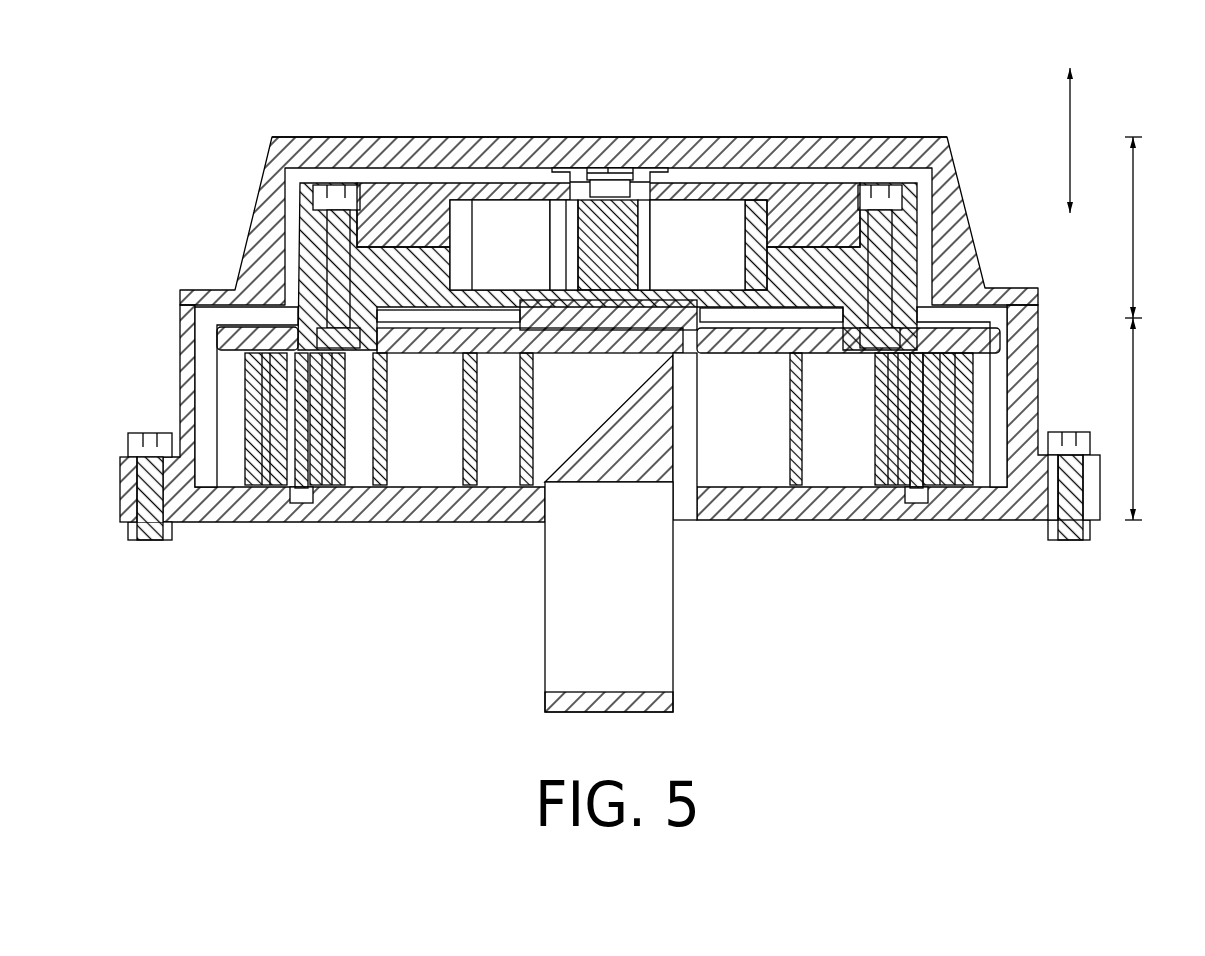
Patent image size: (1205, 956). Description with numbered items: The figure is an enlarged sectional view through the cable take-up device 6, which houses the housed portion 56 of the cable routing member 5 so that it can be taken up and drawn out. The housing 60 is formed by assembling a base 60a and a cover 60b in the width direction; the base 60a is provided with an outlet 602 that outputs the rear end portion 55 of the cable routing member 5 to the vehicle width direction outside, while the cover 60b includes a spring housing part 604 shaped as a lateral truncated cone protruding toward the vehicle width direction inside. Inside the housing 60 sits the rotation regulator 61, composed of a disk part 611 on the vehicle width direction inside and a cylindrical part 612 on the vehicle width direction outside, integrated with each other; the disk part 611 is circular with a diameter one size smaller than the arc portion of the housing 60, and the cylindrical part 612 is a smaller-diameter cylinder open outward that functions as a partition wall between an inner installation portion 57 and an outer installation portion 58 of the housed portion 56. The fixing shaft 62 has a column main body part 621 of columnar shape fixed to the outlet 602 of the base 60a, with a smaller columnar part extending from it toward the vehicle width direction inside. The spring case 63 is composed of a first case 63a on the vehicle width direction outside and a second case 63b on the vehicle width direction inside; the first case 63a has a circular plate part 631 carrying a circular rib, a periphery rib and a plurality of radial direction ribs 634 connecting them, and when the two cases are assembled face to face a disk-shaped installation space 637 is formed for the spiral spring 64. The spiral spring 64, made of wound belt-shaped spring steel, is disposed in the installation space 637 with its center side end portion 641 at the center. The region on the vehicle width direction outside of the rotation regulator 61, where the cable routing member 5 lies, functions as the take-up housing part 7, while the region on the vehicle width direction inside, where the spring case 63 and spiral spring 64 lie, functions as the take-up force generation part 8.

The cable routing member 5 is at (665, 597).
The rear end portion 55 is at (675, 672).
The cable take-up device 6 is at (192, 127).
The take-up housing part 7 is at (1141, 419).
The take-up force generation part 8 is at (1141, 227).
The housed portion 56 is at (600, 484).
The inner installation portion 57 is at (327, 482).
The outer installation portion 58 is at (243, 480).
The housing 60 is at (592, 318).
The base 60a is at (600, 439).
The cover 60b is at (561, 184).
The outlet 602 is at (700, 500).
The spring housing part 604 is at (835, 137).
The rotation regulator 61 is at (552, 437).
The disk part 611 is at (192, 340).
The cylindrical part 612 is at (297, 503).
The fixing shaft 62 is at (581, 436).
The column main body part 621 is at (522, 450).
The spring case 63 is at (546, 205).
The first case 63a is at (313, 268).
The second case 63b is at (395, 193).
The circular plate part 631 is at (487, 192).
The radial direction ribs 634 is at (790, 215).
The installation space 637 is at (716, 264).
The spiral spring 64 is at (697, 181).
The center side end portion 641 is at (578, 237).